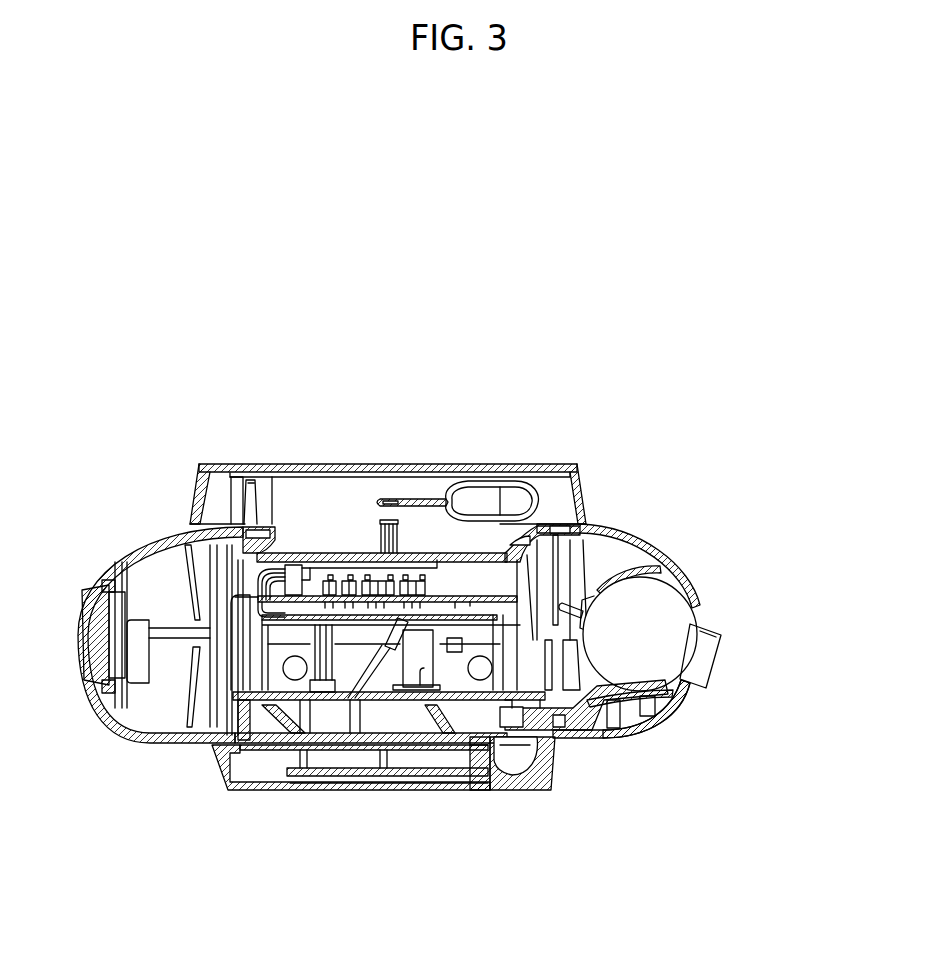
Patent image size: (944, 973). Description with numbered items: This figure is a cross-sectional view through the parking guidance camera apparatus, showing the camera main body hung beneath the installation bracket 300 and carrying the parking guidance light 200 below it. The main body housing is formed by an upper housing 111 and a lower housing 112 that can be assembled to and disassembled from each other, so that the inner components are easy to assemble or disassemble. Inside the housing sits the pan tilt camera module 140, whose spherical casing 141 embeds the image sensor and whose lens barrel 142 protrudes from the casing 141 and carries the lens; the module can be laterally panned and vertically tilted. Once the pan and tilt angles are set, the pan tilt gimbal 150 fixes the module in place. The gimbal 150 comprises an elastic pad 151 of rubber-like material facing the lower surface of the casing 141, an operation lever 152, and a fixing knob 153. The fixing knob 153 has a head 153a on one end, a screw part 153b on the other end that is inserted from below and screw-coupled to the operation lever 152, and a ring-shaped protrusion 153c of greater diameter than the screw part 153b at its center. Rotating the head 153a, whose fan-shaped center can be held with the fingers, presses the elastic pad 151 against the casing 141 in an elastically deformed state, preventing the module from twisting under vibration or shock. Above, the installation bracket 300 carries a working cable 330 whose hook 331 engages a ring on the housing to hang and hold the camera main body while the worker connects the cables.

The upper housing 111 is at (645, 547).
The lower housing 112 is at (655, 720).
The pan tilt camera module 140 is at (716, 632).
The casing 141 is at (665, 600).
The lens barrel 142 is at (708, 657).
The pan tilt gimbal 150 is at (488, 800).
The elastic pad 151 is at (604, 710).
The operation lever 152 is at (548, 716).
The fixing knob 153 is at (423, 810).
The head 153a is at (525, 792).
The screw part 153b is at (452, 778).
The ring-shaped protrusion 153c is at (492, 782).
The parking guidance light 200 is at (240, 792).
The installation bracket 300 is at (311, 464).
The working cable 330 is at (409, 499).
The hook 331 is at (484, 483).